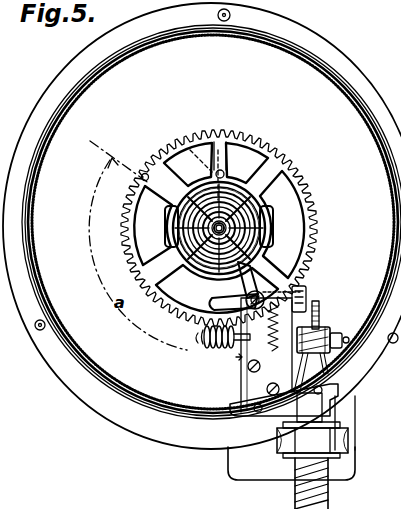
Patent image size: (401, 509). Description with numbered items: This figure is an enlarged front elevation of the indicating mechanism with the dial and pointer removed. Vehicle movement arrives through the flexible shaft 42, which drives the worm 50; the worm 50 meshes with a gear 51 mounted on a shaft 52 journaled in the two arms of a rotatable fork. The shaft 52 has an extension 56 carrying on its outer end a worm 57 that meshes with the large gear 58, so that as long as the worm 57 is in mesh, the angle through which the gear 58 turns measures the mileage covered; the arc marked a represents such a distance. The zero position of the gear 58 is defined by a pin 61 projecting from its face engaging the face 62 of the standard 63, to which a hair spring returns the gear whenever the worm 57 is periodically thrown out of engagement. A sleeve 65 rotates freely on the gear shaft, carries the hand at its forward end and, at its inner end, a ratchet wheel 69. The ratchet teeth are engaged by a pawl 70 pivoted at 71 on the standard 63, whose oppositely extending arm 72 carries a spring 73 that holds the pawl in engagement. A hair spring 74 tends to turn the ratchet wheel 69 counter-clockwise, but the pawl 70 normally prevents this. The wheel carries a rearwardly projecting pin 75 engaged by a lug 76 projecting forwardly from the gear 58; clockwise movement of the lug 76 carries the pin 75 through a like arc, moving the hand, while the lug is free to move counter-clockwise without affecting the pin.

The flexible shaft 42 is at (312, 500).
The worm 50 is at (325, 327).
The gear 51 is at (318, 312).
The shaft 52 is at (344, 340).
The extension 56 is at (235, 338).
The worm 57 is at (198, 340).
The gear 58 is at (318, 190).
The pin 61 is at (145, 173).
The face 62 is at (240, 360).
The standard 63 is at (252, 396).
The sleeve 65 is at (214, 228).
The ratchet wheel 69 is at (280, 224).
The pawl 70 is at (213, 303).
The pivot 71 is at (256, 310).
The arm 72 is at (305, 295).
The spring 73 is at (273, 352).
The hair spring 74 is at (262, 206).
The pin 75 is at (221, 169).
The lug 76 is at (192, 150).